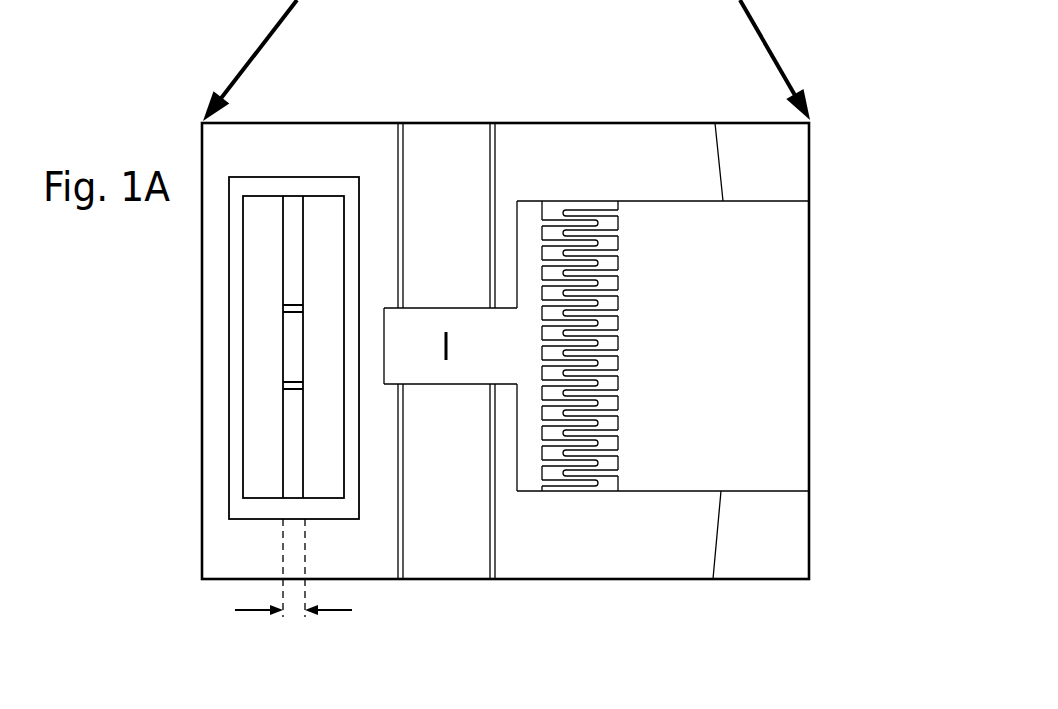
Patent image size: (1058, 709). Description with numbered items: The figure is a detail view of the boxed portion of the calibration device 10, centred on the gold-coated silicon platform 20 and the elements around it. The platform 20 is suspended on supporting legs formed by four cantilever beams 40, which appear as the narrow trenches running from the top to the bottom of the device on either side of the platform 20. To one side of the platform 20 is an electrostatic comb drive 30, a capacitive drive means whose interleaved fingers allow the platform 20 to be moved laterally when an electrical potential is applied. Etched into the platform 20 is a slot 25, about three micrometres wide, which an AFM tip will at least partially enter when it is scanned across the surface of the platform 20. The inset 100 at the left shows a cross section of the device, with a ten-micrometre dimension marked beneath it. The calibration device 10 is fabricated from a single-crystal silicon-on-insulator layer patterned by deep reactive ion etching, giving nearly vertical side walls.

The calibration device 10 is at (755, 242).
The platform 20 is at (468, 332).
The slot 25 is at (447, 347).
The electrostatic comb drive 30 is at (597, 310).
The cantilever beams 40 is at (494, 145).
The inset 100 is at (328, 519).